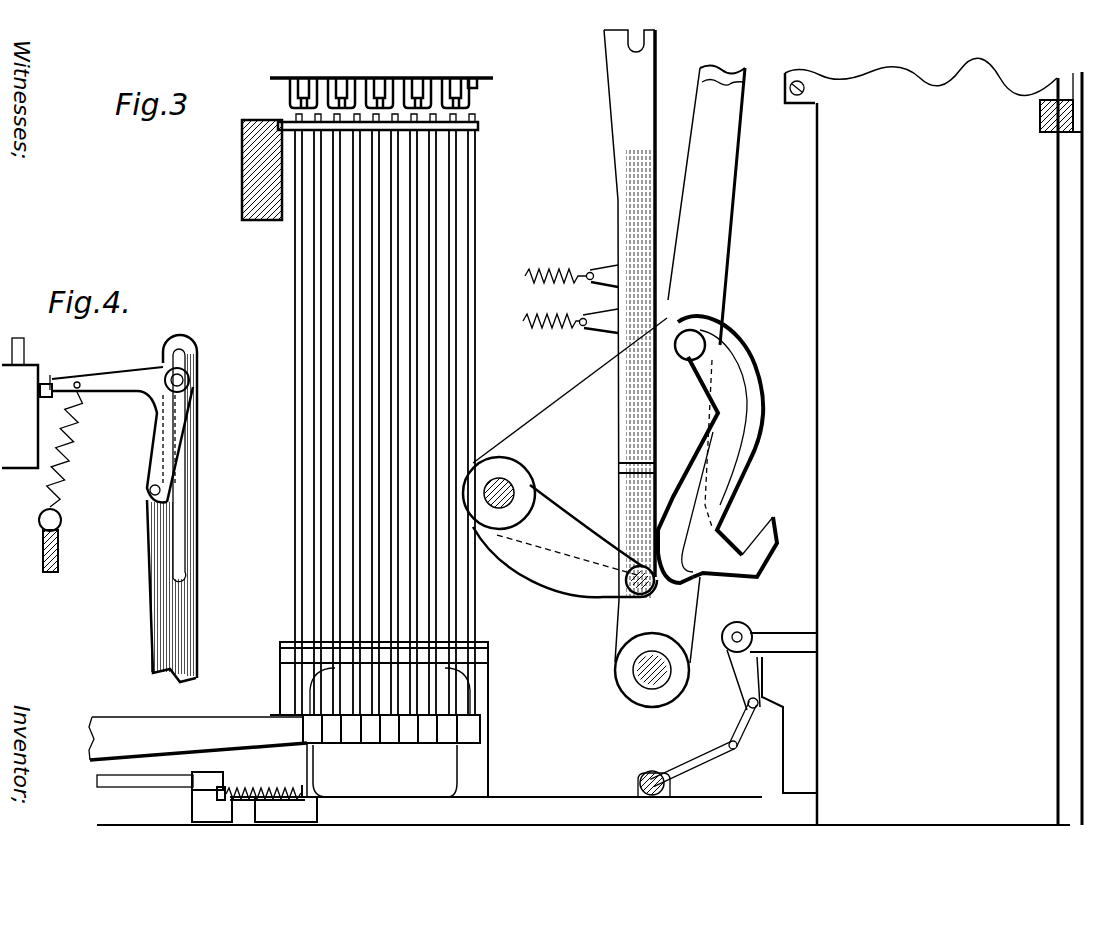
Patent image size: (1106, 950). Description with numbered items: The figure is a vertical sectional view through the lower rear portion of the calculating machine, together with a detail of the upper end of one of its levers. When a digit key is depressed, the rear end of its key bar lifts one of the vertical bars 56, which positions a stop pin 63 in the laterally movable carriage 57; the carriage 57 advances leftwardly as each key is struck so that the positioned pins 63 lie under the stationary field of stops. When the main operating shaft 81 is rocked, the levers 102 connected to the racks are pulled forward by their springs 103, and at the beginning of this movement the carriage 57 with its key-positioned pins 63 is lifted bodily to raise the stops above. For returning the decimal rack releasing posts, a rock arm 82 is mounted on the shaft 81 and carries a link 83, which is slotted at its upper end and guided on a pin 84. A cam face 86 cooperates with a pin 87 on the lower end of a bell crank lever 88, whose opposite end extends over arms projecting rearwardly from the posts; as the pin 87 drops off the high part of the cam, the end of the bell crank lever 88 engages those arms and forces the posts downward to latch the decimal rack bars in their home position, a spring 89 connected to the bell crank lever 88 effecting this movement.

In FIG. 3, the vertical bars 56 is at (452, 176).
In FIG. 3, the carriage 57 is at (283, 78).
In FIG. 3, the stop pins 63 is at (440, 95).
In FIG. 3, the main operating shaft 81 is at (508, 487).
In FIG. 3, the rock arm 82 is at (552, 573).
In FIG. 3, the link 83 is at (617, 133).
In FIG. 4, the link 83 is at (185, 625).
In FIG. 3, the levers 102 is at (720, 70).
In FIG. 3, the springs 103 is at (556, 316).
In FIG. 4, the pin 84 is at (190, 370).
In FIG. 4, the cam face 86 is at (150, 503).
In FIG. 4, the pin 87 is at (148, 491).
In FIG. 4, the bell crank lever 88 is at (150, 455).
In FIG. 4, the spring 89 is at (79, 420).